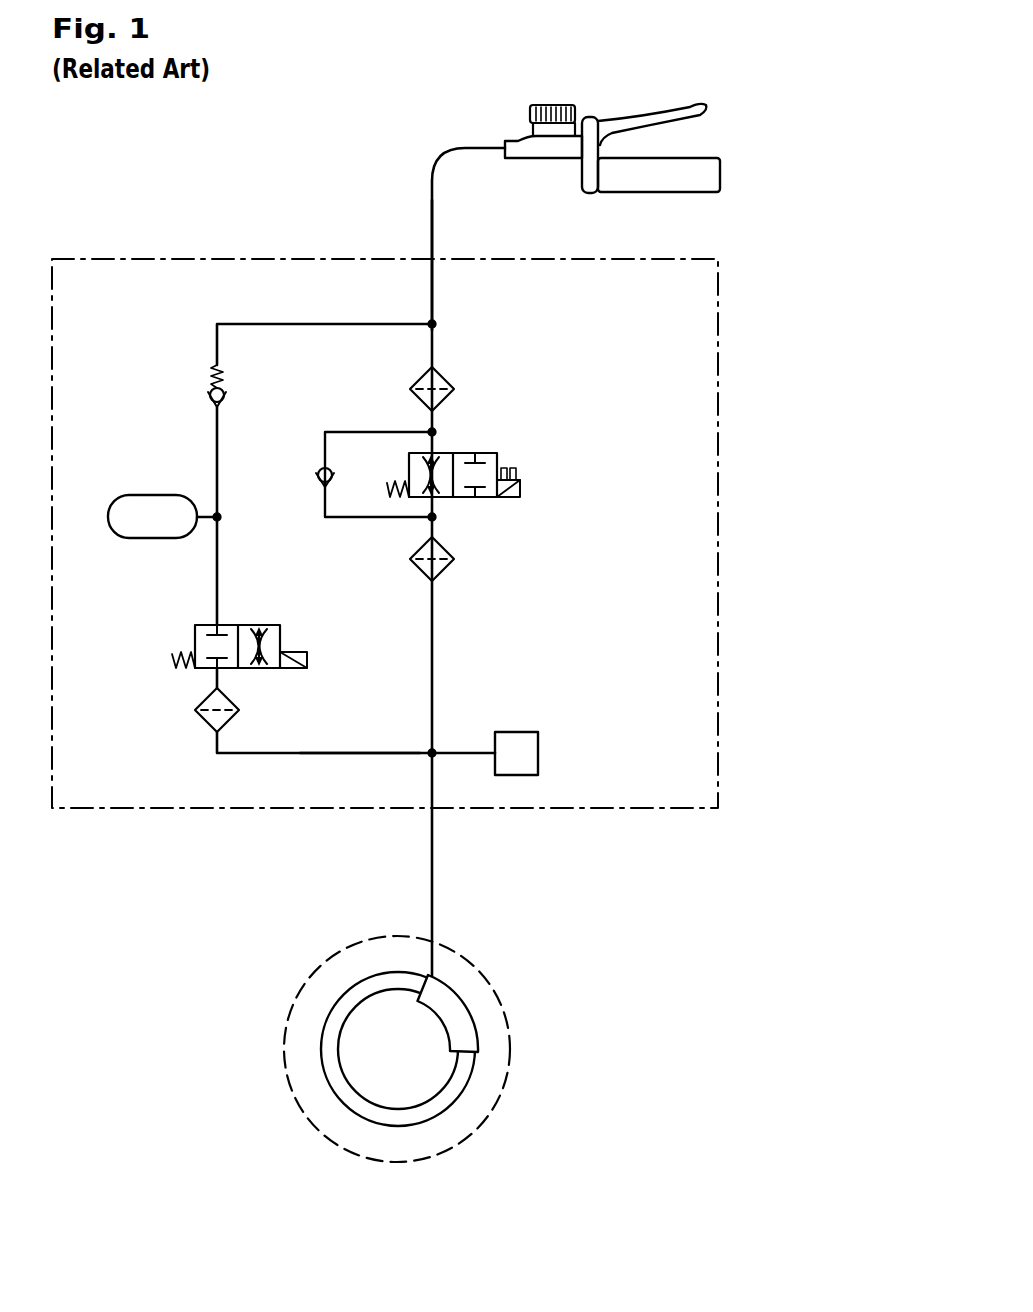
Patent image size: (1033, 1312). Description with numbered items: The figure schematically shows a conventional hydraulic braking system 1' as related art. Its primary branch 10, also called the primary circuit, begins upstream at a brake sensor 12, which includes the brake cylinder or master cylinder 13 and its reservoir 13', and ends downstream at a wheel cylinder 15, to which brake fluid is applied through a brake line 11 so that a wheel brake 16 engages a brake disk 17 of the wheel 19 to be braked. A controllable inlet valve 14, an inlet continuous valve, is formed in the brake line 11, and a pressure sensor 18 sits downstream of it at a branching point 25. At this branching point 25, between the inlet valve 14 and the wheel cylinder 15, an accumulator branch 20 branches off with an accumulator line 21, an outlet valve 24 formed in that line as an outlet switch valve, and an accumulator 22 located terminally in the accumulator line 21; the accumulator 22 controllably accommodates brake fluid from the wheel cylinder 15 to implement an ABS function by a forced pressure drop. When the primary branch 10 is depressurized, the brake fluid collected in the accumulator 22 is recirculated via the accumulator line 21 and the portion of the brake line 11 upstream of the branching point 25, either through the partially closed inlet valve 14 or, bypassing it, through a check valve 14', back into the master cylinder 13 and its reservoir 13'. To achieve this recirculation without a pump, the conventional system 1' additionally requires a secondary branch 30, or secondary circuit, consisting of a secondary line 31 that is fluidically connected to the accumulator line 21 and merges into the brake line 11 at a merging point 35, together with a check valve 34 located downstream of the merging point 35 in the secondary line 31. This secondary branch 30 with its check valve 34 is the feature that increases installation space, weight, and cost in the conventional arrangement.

The conventional braking system 1' is at (808, 166).
The primary branch 10 is at (410, 221).
The brake line 11 is at (444, 157).
The brake sensor 12 is at (707, 106).
The brake cylinder 13 is at (521, 145).
The reservoir 13' is at (552, 120).
The inlet valve 14 is at (481, 435).
The check valve 14' is at (352, 444).
The wheel cylinder 15 is at (462, 1000).
The wheel brake 16 is at (486, 1138).
The brake disk 17 is at (462, 1082).
The pressure sensor 18 is at (538, 753).
The wheel 19 is at (510, 1042).
The accumulator branch 20 is at (326, 762).
The accumulator line 21 is at (337, 753).
The accumulator 22 is at (140, 495).
The outlet valve 24 is at (215, 623).
The branching point 25 is at (428, 752).
The secondary branch 30 is at (326, 304).
The secondary line 31 is at (218, 346).
The check valve 34 is at (208, 393).
The merging point 35 is at (433, 324).